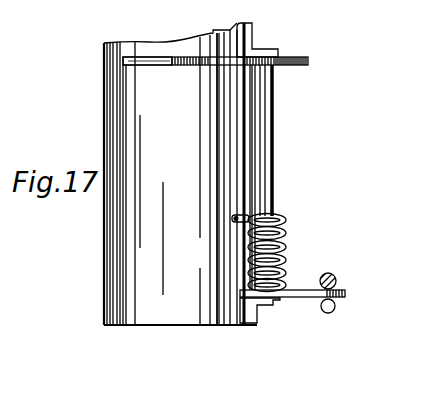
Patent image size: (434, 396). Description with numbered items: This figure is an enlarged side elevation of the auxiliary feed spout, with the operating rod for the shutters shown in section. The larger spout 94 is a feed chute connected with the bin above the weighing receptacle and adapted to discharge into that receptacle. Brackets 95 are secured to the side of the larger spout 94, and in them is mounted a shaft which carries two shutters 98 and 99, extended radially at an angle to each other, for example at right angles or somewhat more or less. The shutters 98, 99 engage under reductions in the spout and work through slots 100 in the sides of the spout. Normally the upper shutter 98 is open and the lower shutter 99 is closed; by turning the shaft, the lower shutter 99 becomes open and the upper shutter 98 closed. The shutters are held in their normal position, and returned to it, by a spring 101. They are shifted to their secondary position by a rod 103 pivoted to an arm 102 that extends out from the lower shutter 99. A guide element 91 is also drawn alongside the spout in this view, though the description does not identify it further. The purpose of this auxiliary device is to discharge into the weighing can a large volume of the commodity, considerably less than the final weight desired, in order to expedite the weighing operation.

The guide rod 91 is at (275, 185).
The larger spout 94 is at (103, 117).
The brackets 95 is at (252, 32).
The upper shutter 98 is at (313, 64).
The lower shutter 99 is at (236, 308).
The slots 100 is at (135, 62).
The spring 101 is at (286, 229).
The arm 102 is at (346, 293).
The rod 103 is at (338, 276).